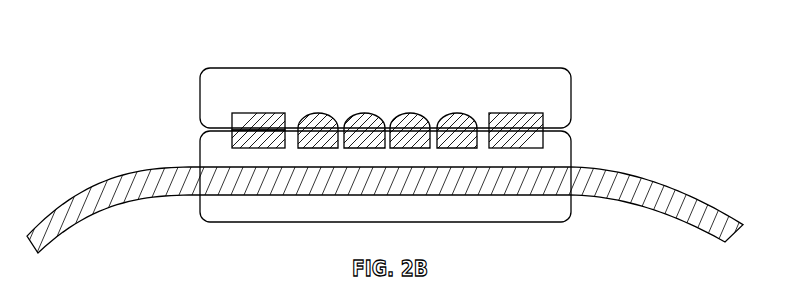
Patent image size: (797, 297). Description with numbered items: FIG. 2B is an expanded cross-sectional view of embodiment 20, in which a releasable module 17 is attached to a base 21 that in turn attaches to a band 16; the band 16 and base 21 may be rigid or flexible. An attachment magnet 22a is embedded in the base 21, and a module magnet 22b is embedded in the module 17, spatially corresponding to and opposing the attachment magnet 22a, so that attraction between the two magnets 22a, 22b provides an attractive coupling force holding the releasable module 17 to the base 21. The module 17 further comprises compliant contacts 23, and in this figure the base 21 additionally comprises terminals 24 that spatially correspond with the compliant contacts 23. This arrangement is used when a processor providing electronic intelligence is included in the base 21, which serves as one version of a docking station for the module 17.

The band 16 is at (693, 202).
The releasable module 17 is at (550, 85).
The embodiment 20 is at (658, 122).
The base 21 is at (565, 157).
The attachment magnet 22a is at (250, 122).
The module magnet 22b is at (243, 139).
The compliant contacts 23 is at (365, 118).
The terminals 24 is at (467, 140).